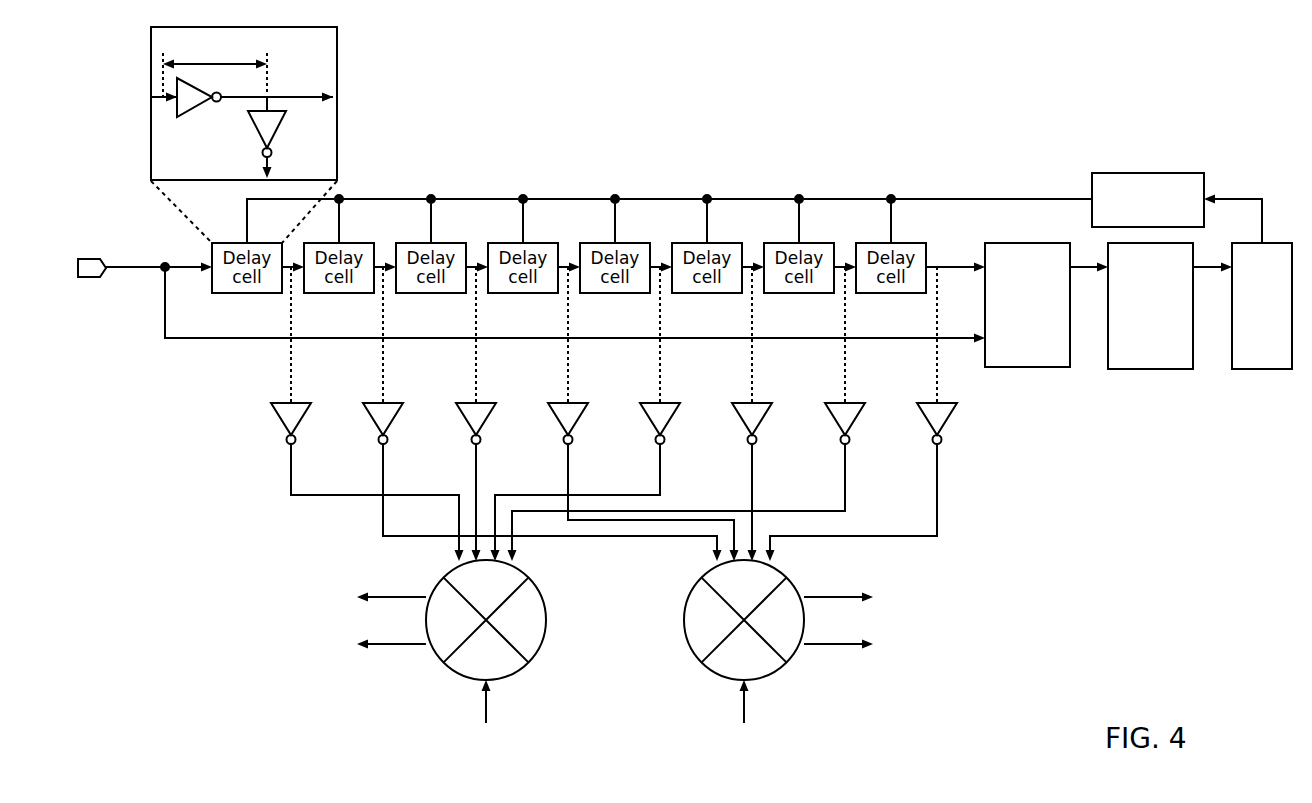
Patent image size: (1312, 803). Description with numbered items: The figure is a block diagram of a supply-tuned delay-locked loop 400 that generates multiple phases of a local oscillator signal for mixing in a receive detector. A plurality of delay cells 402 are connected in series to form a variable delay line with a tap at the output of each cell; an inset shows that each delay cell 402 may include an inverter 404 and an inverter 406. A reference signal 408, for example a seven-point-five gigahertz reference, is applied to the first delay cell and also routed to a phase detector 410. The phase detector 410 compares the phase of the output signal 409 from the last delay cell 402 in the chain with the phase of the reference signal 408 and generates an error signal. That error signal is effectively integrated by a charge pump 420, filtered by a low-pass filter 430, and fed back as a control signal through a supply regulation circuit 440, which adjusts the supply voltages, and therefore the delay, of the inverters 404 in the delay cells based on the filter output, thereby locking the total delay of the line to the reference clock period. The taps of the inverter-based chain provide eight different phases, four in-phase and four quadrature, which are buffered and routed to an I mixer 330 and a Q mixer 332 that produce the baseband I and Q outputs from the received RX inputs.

The supply-tuned delay-locked loop 400 is at (1214, 67).
The delay cell 402 is at (235, 293).
The inverter 404 is at (193, 108).
The inverter 406 is at (279, 127).
The reference signal 408 is at (165, 308).
The output signal 409 is at (956, 270).
The phase detector 410 is at (1013, 367).
The charge pump 420 is at (1136, 369).
The low-pass filter 430 is at (1247, 369).
The supply regulation circuit 440 is at (1145, 173).
The I mixer 330 is at (452, 676).
The Q mixer 332 is at (710, 676).